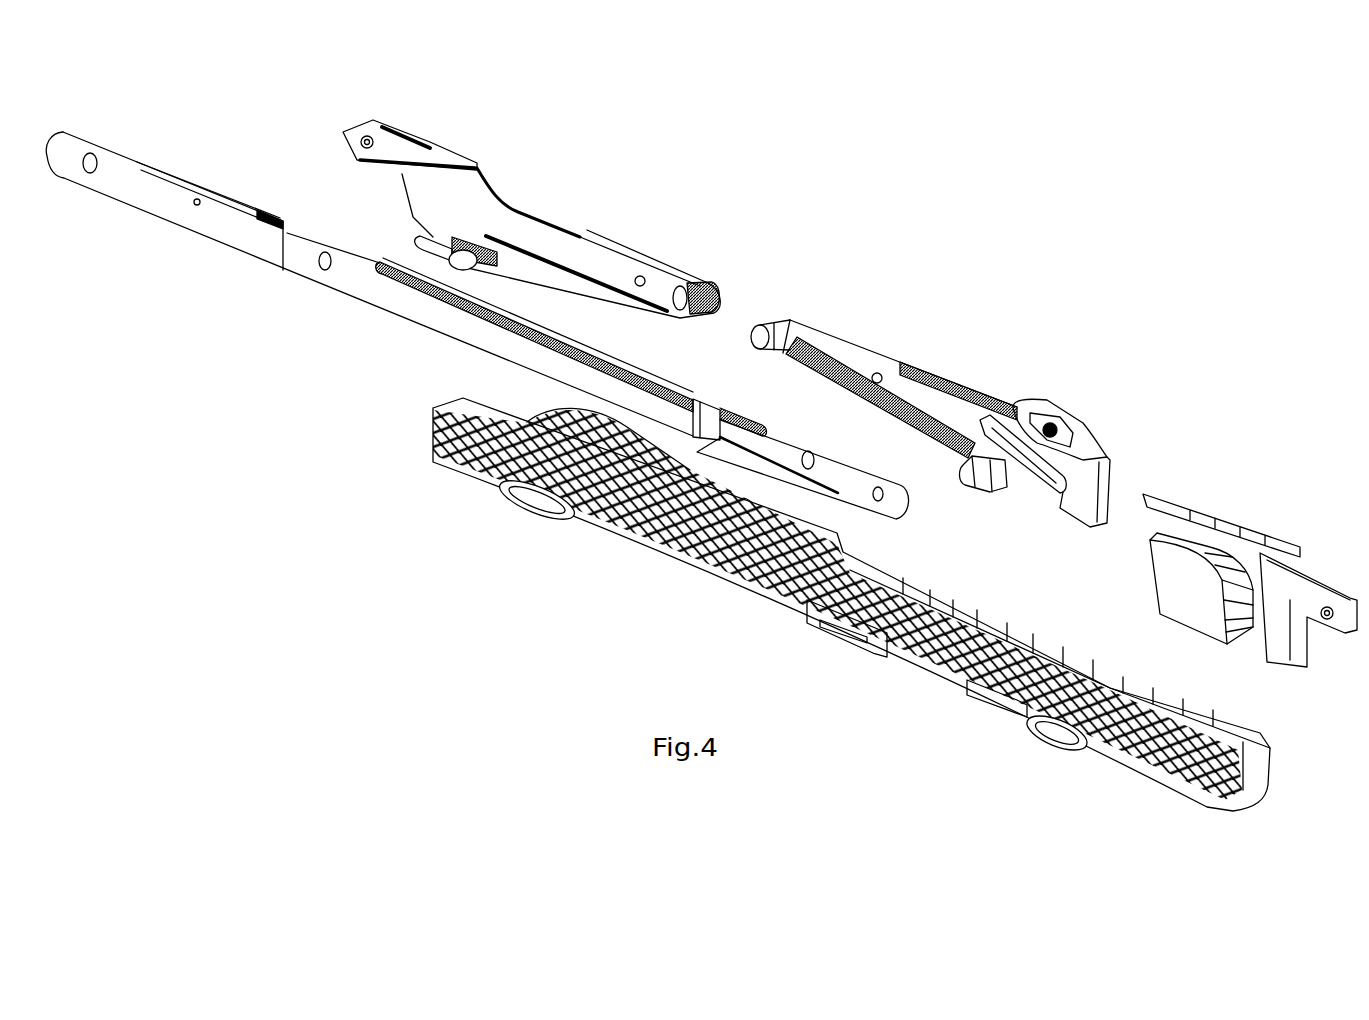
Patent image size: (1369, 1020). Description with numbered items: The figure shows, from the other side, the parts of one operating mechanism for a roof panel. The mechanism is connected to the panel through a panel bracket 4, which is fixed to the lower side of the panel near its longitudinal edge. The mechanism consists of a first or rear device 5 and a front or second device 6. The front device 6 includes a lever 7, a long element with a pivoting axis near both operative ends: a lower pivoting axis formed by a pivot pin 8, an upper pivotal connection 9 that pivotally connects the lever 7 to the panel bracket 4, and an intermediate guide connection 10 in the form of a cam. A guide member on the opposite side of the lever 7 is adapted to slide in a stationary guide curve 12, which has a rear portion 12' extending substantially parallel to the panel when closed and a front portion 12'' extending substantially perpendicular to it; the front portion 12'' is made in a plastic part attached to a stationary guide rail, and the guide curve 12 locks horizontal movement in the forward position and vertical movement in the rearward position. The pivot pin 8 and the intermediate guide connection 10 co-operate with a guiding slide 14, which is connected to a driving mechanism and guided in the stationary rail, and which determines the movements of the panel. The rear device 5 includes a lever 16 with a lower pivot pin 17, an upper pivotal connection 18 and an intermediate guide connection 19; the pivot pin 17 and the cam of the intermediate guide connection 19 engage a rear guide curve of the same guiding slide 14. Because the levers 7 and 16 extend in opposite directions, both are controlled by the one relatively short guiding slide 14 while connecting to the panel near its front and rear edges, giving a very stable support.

The panel bracket 4 is at (318, 270).
The first or rear device 5 is at (510, 182).
The front or second device 6 is at (1012, 384).
The lever 7 is at (927, 388).
The pivot pin 8 is at (777, 320).
The upper pivotal connection 9 is at (1057, 414).
The intermediate guide connection 10 is at (997, 490).
The stationary guide curve 12 is at (1215, 539).
The rear portion 12' is at (1163, 583).
The front portion 12'' is at (1302, 561).
The guiding slide 14 is at (913, 661).
The lever 16 is at (587, 247).
The pivot pin 17 is at (684, 288).
The upper pivotal connection 18 is at (378, 122).
The intermediate guide connection 19 is at (480, 238).